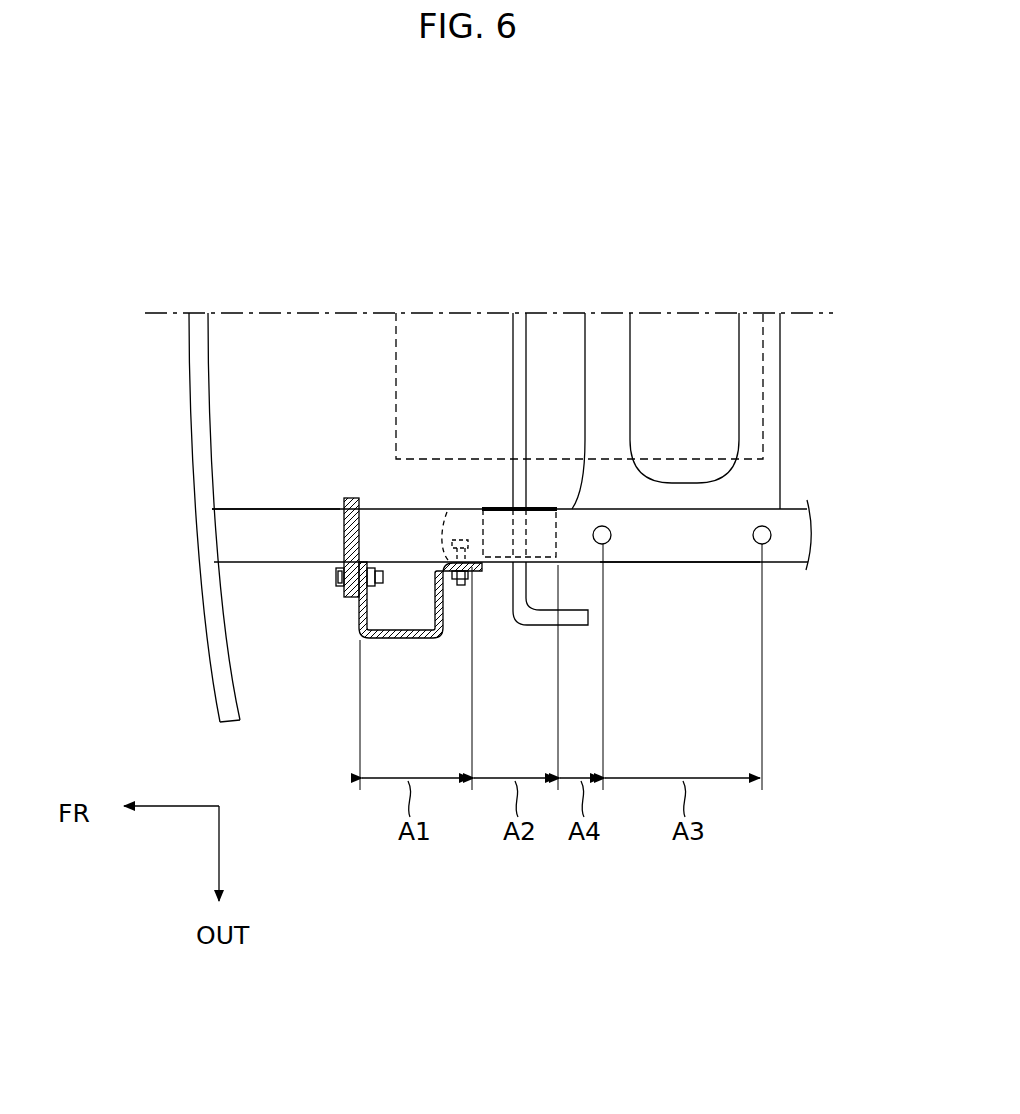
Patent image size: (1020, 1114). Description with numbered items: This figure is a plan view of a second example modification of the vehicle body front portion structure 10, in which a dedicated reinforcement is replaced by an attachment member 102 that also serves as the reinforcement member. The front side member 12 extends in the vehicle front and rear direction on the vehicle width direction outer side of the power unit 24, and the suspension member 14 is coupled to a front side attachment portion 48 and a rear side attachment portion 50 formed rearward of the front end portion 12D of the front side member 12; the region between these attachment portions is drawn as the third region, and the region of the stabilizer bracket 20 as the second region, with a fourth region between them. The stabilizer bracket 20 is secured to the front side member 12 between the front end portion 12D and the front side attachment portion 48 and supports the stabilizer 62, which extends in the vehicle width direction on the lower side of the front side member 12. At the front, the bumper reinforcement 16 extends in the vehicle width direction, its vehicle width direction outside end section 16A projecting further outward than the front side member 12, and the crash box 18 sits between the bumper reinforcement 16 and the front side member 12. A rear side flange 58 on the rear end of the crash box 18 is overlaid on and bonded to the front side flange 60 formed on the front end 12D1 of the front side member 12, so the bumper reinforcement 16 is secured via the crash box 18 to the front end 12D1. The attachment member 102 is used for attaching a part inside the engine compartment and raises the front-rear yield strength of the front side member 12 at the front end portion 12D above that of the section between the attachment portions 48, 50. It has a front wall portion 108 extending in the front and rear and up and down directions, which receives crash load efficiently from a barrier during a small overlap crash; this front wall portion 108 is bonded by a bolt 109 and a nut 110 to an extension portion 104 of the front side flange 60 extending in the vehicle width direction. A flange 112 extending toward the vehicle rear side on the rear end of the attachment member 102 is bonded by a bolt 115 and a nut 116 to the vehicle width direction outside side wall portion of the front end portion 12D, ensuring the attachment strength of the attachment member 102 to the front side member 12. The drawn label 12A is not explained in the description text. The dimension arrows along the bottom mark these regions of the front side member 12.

The vehicle body front portion structure 10 is at (545, 252).
The front side member 12 is at (677, 568).
The rocker bottom wall 12A is at (719, 566).
The front end portion 12D is at (402, 532).
The front end 12D1 is at (347, 523).
The suspension member 14 is at (781, 403).
The bumper reinforcement 16 is at (186, 413).
The vehicle width direction outside end section 16A is at (197, 636).
The crash box 18 is at (234, 507).
The stabilizer bracket 20 is at (480, 532).
The power unit 24 is at (395, 392).
The front side attachment portion 48 is at (611, 541).
The rear side attachment portion 50 is at (770, 541).
The rear side flange 58 is at (343, 549).
The front side flange 60 is at (366, 545).
The stabilizer 62 is at (512, 400).
The attachment member 102 is at (388, 643).
The extension portion 104 is at (350, 592).
The front wall portion 108 is at (358, 612).
The bolt 109 is at (337, 580).
The nut 110 is at (396, 630).
The flange 112 is at (460, 584).
The bolt 115 is at (464, 582).
The nut 116 is at (447, 532).